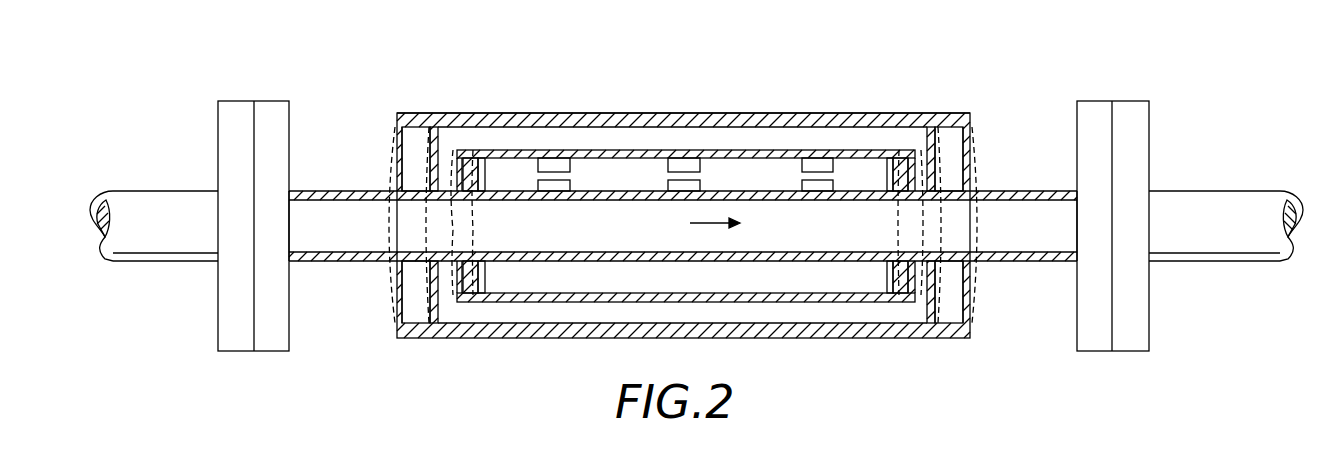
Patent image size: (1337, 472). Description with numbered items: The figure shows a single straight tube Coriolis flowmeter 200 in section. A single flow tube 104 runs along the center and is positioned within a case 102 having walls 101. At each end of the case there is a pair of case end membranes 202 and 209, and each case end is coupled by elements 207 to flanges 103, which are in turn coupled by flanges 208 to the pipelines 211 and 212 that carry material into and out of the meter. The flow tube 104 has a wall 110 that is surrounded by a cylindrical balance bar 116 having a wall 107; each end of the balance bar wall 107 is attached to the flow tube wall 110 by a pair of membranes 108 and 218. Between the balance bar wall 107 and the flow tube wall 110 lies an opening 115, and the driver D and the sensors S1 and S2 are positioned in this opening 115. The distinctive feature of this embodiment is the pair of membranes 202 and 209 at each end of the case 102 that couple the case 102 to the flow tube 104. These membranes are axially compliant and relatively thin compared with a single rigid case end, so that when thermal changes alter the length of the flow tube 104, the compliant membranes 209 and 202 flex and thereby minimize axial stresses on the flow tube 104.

The flowmeter 200 is at (762, 58).
The walls 101 is at (578, 115).
The case 102 is at (550, 104).
The cylindrical balance bar 116 is at (673, 113).
The wall 107 is at (692, 152).
The membrane 108 is at (502, 175).
The opening 115 is at (871, 172).
The wall 110 is at (623, 252).
The flow tube 104 is at (687, 223).
The sensor S1 is at (523, 168).
The sensor S2 is at (833, 189).
The driver D is at (703, 168).
The case end membrane 209 is at (456, 163).
The membrane 218 is at (456, 268).
The case end membrane 202 is at (396, 150).
The flange 103 is at (280, 101).
The flange 208 is at (232, 125).
The element 207 is at (352, 262).
The pipeline 211 is at (178, 242).
The pipeline 212 is at (1230, 234).